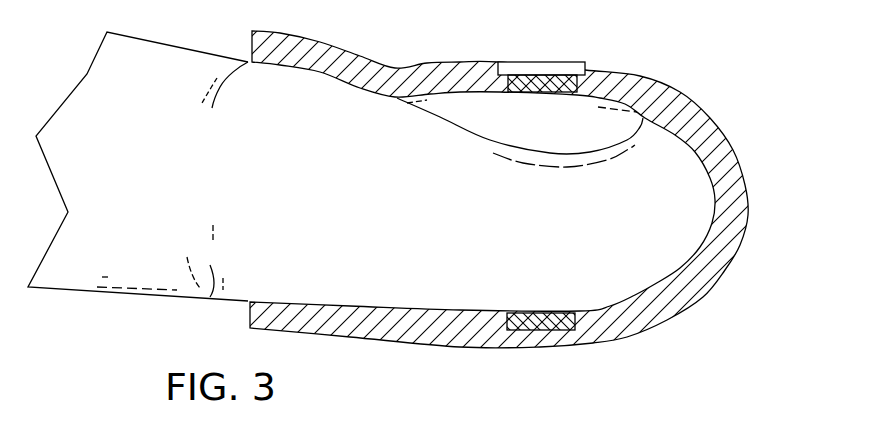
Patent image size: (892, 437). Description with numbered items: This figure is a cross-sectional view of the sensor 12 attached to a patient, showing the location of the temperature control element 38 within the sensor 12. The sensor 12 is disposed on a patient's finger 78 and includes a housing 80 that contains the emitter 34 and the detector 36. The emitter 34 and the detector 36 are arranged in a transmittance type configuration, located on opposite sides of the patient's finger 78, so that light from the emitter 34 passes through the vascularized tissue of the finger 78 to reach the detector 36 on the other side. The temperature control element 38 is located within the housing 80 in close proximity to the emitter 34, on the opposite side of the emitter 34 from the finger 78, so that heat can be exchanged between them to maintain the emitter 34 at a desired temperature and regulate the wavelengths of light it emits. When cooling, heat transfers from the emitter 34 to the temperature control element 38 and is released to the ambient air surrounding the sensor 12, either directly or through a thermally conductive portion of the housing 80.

The sensor 12 is at (532, 201).
The emitter 34 is at (588, 83).
The detector 36 is at (545, 342).
The temperature control element 38 is at (530, 63).
The finger 78 is at (160, 35).
The housing 80 is at (731, 262).